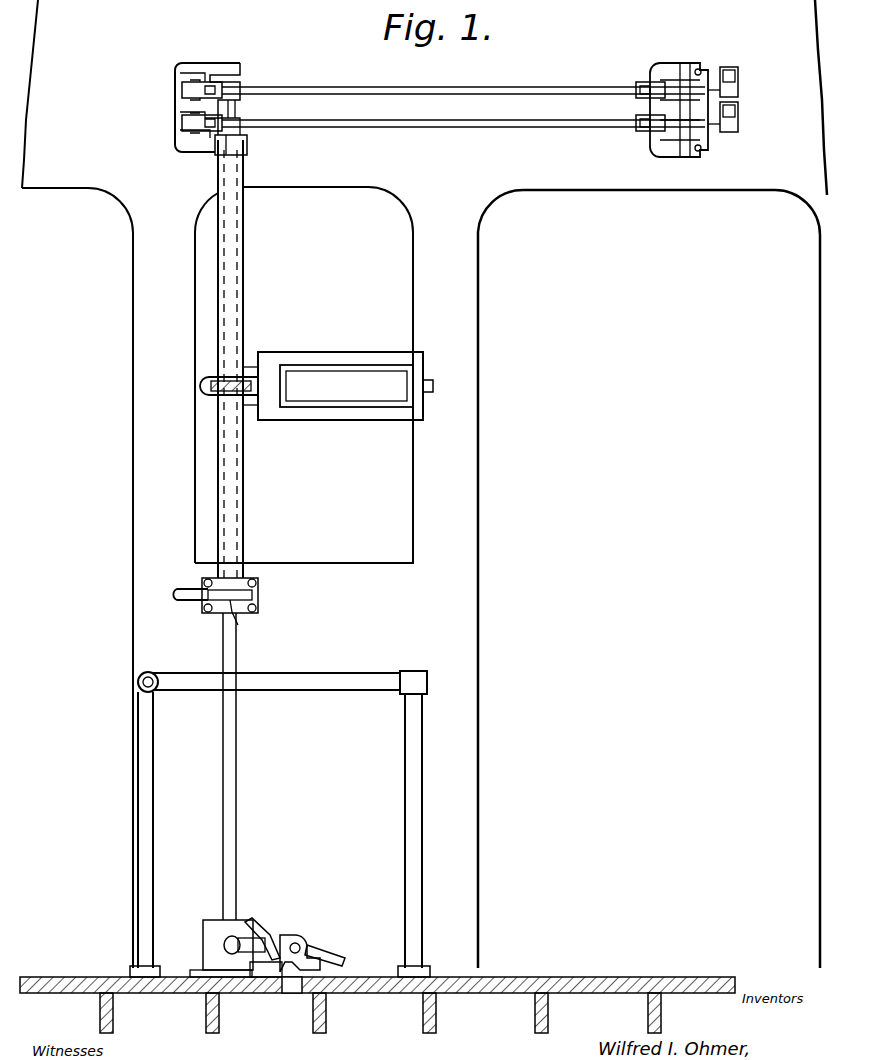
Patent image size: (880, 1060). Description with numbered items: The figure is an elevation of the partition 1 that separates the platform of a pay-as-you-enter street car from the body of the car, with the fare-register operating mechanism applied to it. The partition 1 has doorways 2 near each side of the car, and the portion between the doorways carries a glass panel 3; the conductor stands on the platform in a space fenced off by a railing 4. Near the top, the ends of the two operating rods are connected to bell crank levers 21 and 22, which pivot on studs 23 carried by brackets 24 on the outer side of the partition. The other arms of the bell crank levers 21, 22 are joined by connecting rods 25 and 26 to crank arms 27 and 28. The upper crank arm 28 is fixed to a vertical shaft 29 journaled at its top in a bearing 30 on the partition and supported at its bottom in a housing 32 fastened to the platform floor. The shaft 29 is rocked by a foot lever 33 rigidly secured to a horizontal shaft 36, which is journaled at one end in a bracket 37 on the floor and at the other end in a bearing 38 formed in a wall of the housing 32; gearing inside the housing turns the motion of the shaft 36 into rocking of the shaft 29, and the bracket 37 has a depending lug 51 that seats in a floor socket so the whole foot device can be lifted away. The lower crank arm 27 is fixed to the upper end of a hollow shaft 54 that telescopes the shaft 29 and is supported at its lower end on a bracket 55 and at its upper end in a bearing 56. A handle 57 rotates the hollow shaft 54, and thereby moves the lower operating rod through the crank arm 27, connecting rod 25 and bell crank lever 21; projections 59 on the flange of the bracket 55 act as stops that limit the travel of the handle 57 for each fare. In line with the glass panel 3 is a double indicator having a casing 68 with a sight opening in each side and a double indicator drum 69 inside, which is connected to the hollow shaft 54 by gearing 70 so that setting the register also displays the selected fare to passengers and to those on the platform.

The partition 1 is at (455, 352).
The doorway 2 is at (40, 205).
The glass panel 3 is at (390, 240).
The railing 4 is at (330, 672).
The bell crank lever 21 is at (708, 128).
The bell crank lever 22 is at (652, 99).
The stud 23 is at (697, 65).
The bracket 24 is at (655, 140).
The connecting rod 25 is at (452, 128).
The connecting rod 26 is at (462, 78).
The crank arm 27 is at (182, 124).
The crank arm 28 is at (182, 90).
The vertical shaft 29 is at (237, 108).
The bearing 30 is at (235, 72).
The housing 32 is at (205, 928).
The foot lever 33 is at (282, 940).
The horizontal shaft 36 is at (250, 925).
The bracket 37 is at (262, 995).
The bearing 38 is at (224, 947).
The depending lug 51 is at (291, 995).
The hollow shaft 54 is at (248, 230).
The bracket 55 is at (258, 584).
The bearing 56 is at (222, 150).
The handle 57 is at (182, 602).
The projections 59 is at (240, 620).
The casing 68 is at (303, 352).
The double indicator drum 69 is at (335, 372).
The gearing 70 is at (208, 392).